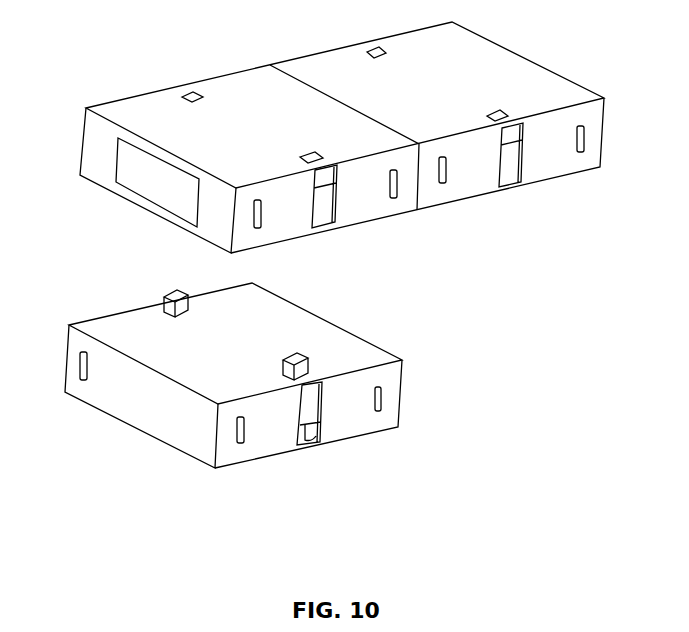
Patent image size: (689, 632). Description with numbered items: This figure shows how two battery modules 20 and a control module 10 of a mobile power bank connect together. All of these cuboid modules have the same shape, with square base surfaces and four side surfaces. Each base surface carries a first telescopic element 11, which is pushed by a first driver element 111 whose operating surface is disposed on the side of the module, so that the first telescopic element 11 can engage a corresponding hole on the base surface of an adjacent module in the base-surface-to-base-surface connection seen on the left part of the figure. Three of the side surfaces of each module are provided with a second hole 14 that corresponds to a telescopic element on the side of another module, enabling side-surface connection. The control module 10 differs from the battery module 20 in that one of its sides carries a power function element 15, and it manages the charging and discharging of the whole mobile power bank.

The control module 10 is at (140, 88).
The first telescopic element 11 is at (197, 90).
The second hole 14 is at (588, 143).
The power function element 15 is at (150, 182).
The battery module 20 is at (545, 192).
The first driver element 111 is at (325, 233).